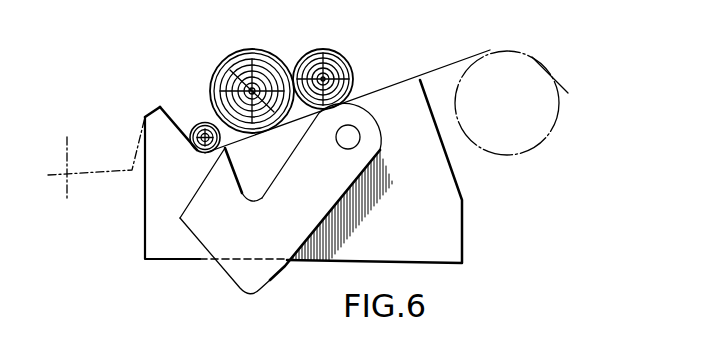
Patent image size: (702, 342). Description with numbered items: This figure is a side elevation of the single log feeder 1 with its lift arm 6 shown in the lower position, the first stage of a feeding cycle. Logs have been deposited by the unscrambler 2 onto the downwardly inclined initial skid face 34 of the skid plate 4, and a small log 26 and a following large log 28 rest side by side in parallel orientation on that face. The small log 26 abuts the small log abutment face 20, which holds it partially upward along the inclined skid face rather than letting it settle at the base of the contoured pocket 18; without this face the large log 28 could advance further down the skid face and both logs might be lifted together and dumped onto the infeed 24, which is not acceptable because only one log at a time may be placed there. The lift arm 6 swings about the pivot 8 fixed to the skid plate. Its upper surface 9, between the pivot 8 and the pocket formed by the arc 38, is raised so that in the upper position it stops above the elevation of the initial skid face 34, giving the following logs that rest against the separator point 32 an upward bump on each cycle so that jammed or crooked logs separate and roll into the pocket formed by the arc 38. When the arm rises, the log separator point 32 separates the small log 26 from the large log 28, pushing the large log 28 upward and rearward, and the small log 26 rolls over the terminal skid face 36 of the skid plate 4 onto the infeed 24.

The single log feeder 1 is at (469, 219).
The unscrambler 2 is at (490, 50).
The skid plate 4 is at (438, 236).
The lift arm 6 is at (352, 205).
The pivot 8 is at (360, 137).
The upper surface 9 is at (281, 168).
The contoured pocket 18 is at (168, 110).
The small log abutment face 20 is at (193, 152).
The infeed 24 is at (118, 178).
The small log 26 is at (200, 123).
The large log 28 is at (278, 57).
The log separator point 32 is at (223, 153).
The initial skid face 34 is at (397, 86).
The terminal skid face 36 is at (145, 117).
The arc 38 is at (238, 184).